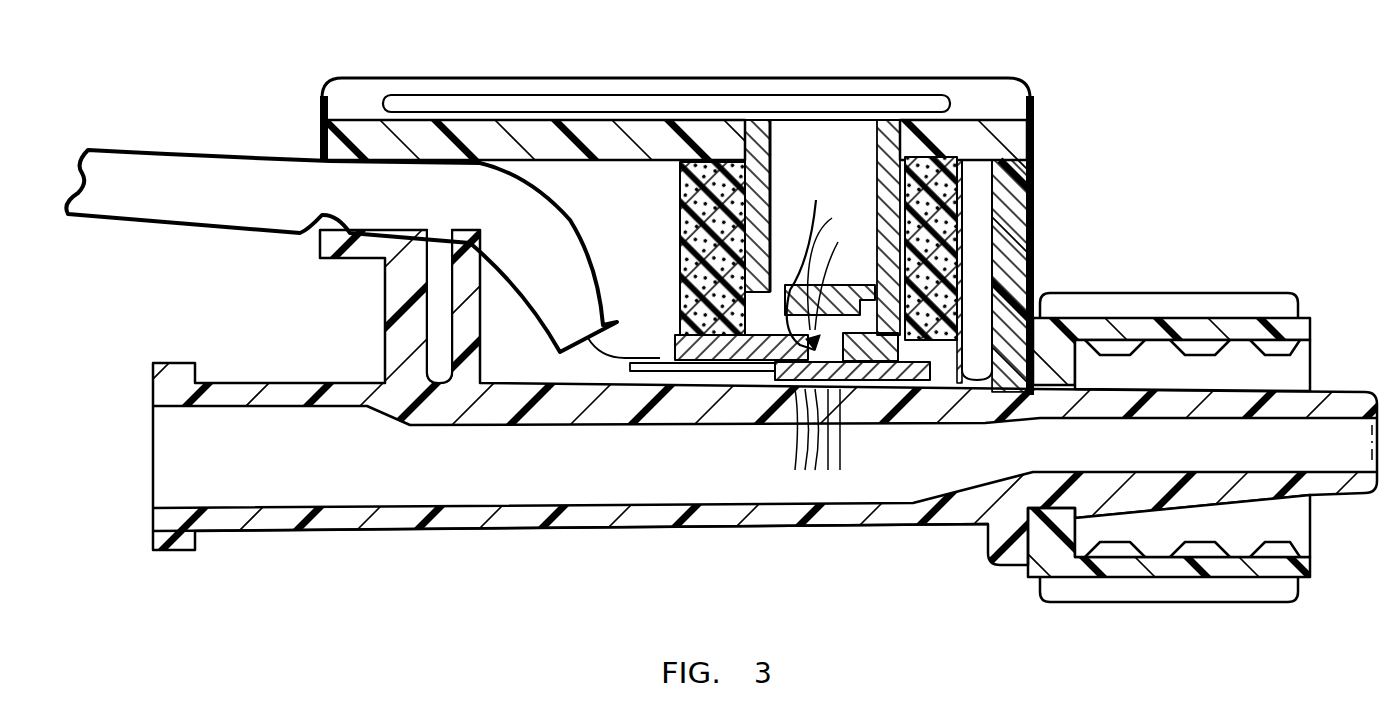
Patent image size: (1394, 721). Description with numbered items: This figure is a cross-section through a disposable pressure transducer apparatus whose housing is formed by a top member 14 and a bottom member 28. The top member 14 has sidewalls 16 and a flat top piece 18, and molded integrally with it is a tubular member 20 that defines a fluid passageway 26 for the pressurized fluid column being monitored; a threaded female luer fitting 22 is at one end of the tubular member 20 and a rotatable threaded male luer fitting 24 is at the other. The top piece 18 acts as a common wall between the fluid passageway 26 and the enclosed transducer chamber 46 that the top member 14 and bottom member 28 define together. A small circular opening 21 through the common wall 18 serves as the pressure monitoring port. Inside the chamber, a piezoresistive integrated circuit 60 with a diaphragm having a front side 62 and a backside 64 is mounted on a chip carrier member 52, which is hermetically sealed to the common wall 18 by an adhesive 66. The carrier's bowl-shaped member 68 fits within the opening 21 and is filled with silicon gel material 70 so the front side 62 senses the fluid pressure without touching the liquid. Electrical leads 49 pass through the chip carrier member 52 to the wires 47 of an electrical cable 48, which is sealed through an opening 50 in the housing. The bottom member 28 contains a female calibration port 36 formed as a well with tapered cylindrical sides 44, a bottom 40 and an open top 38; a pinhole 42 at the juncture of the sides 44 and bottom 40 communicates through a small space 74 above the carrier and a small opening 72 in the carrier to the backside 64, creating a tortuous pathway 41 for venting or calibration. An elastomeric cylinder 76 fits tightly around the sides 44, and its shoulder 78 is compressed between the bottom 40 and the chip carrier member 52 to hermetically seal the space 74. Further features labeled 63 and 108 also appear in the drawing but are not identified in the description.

The top member 14 is at (722, 548).
The sidewalls 16 is at (385, 352).
The top piece 18 is at (460, 410).
The tubular member 20 is at (572, 527).
The opening 21 is at (845, 400).
The threaded female luer fitting 22 is at (230, 531).
The rotatable threaded male luer fitting 24 is at (1095, 578).
The fluid passageway 26 is at (447, 480).
The bottom member 28 is at (318, 125).
The female calibration port 36 is at (440, 292).
The open top 38 is at (838, 140).
The bottom 40 is at (832, 218).
The tortuous pathway 41 is at (816, 200).
The pinhole 42 is at (682, 221).
The tapered cylindrical sides 44 is at (762, 170).
The transducer chamber 46 is at (640, 190).
The wires 47 is at (598, 365).
The electrical cable 48 is at (172, 185).
The electrical leads 49 is at (665, 395).
The opening 50 is at (338, 222).
The chip carrier member 52 is at (700, 350).
The integrated circuit 60 is at (680, 342).
The front side 62 is at (875, 385).
The port 63 is at (818, 440).
The backside 64 is at (818, 300).
The adhesive 66 is at (785, 400).
The bowl-shaped member 68 is at (800, 440).
The silicon gel material 70 is at (828, 440).
The opening 72 is at (682, 248).
The space 74 is at (838, 242).
The elastomeric cylinder 76 is at (958, 220).
The shoulder 78 is at (930, 370).
The seal element 108 is at (683, 284).